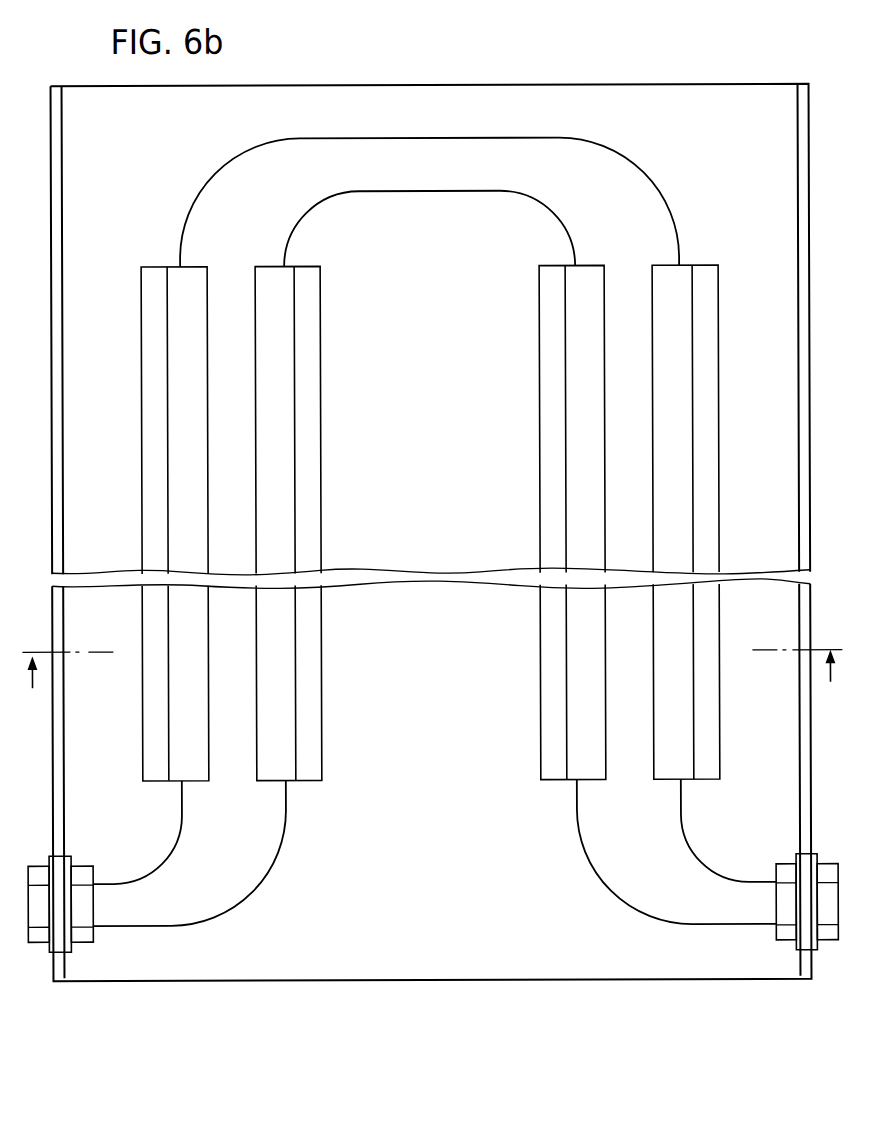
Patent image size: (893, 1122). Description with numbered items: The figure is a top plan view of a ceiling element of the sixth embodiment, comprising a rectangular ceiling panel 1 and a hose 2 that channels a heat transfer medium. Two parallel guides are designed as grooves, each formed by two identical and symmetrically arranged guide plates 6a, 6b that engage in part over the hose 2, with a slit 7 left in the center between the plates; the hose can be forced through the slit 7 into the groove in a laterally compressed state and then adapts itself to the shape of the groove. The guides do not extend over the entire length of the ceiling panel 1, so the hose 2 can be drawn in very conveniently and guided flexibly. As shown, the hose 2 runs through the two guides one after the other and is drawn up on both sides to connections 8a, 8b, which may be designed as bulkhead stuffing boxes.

The ceiling panel 1 is at (423, 102).
The hose 2 is at (417, 175).
The guide plate 6a is at (180, 468).
The guide plate 6b is at (282, 467).
The slit 7 is at (238, 382).
The connection 8a is at (38, 877).
The connection 8b is at (829, 872).